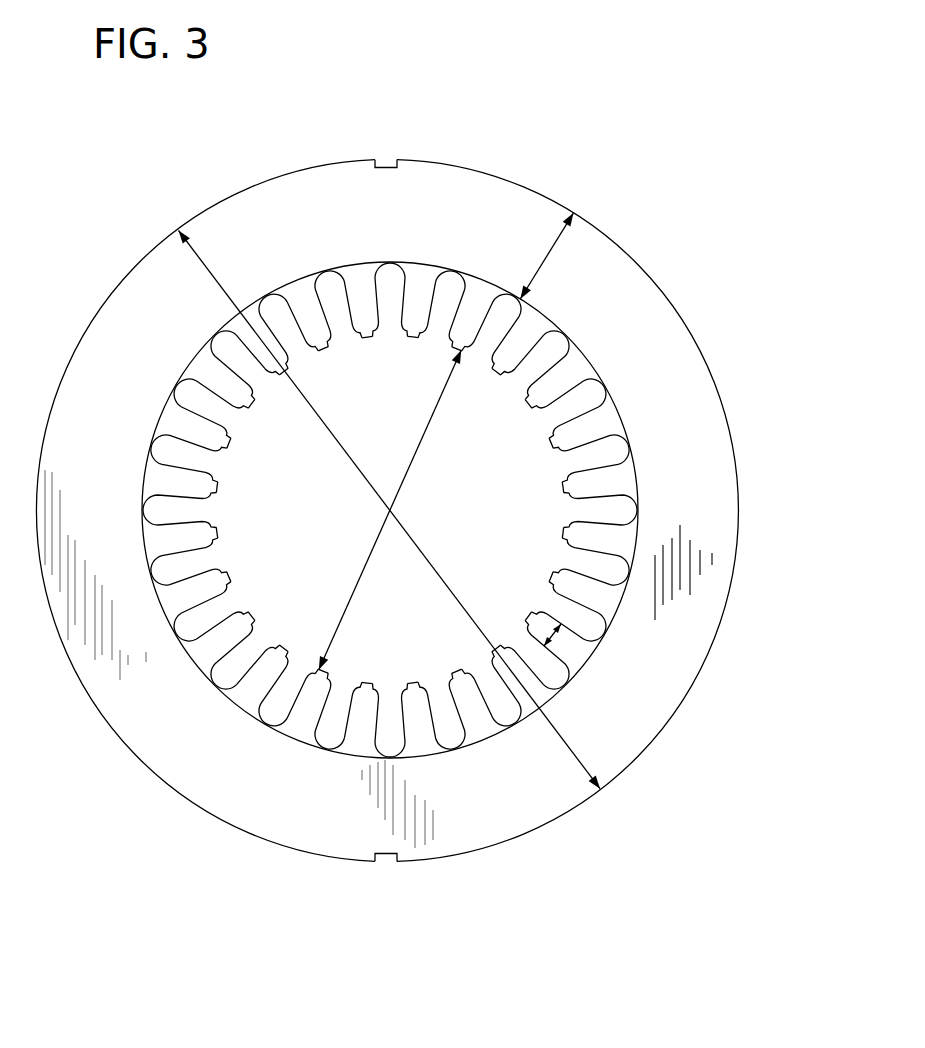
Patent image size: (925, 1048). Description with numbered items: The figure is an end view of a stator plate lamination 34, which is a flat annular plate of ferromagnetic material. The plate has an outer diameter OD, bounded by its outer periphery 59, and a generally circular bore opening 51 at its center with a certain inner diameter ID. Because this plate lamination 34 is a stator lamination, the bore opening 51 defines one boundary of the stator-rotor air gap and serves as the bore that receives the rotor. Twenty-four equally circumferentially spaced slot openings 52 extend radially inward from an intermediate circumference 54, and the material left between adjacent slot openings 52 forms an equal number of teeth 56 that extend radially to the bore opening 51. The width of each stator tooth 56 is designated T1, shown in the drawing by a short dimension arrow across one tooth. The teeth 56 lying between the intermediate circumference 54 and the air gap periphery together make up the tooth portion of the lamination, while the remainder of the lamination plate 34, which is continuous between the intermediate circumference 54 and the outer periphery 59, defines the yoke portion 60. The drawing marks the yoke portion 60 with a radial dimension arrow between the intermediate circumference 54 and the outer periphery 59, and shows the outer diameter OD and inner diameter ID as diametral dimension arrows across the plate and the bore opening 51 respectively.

The stator plate lamination 34 is at (387, 491).
The bore opening 51 is at (390, 510).
The slot openings 52 is at (432, 301).
The intermediate circumference 54 is at (640, 479).
The teeth 56 is at (235, 402).
The outer periphery 59 is at (453, 162).
The yoke portion 60 is at (547, 263).
The outer diameter OD is at (348, 458).
The inner diameter ID is at (415, 455).
The width of stator tooth T1 is at (556, 638).